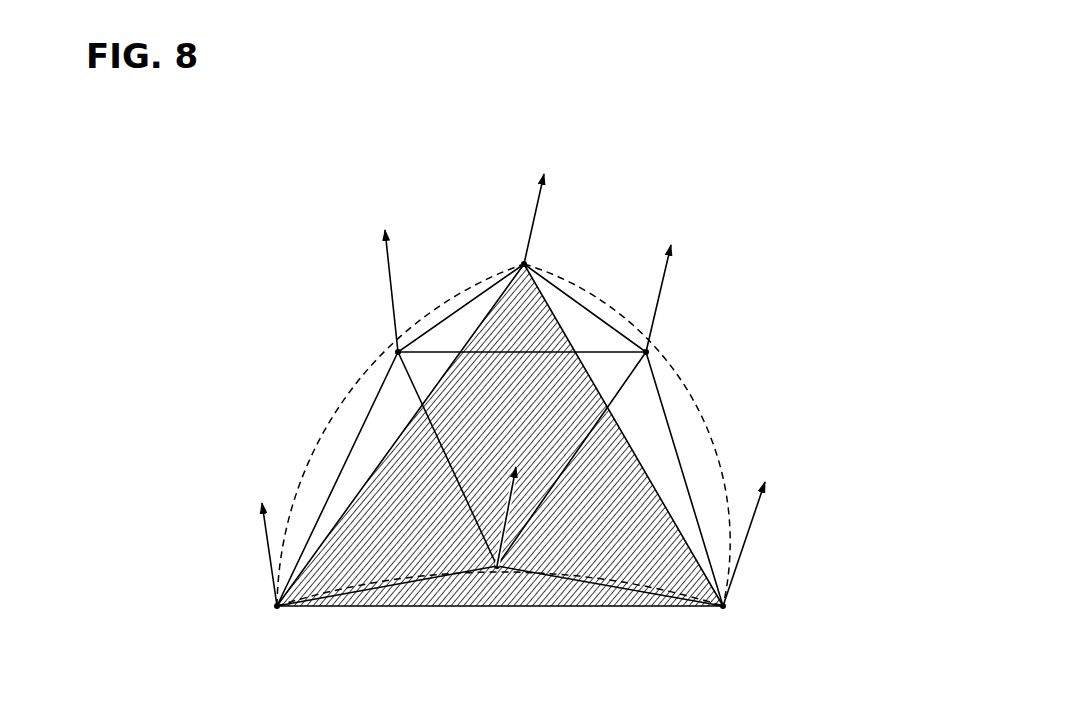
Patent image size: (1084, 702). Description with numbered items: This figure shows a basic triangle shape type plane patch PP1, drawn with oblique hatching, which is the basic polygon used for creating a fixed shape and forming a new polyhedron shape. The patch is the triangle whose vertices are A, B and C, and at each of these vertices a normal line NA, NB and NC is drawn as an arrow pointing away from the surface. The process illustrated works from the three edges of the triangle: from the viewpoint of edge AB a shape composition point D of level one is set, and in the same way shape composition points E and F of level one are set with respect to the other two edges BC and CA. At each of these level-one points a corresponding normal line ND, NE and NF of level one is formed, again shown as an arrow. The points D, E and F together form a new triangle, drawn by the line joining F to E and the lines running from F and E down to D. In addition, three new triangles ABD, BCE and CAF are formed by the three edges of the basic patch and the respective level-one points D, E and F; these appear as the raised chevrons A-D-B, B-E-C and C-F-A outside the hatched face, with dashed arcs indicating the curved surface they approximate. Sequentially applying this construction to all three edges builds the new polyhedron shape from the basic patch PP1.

The basic triangle plane patch PP1 is at (326, 115).
The triangle vertex A is at (278, 621).
The triangle vertex B is at (724, 619).
The triangle vertex C is at (513, 254).
The shape composition point D of level 1 D is at (480, 554).
The shape composition point E of level 1 E is at (656, 344).
The shape composition point F of level 1 F is at (383, 351).
The normal line at vertex A NA is at (262, 537).
The normal line at vertex B NB is at (751, 529).
The normal line at vertex C NC is at (544, 204).
The normal line ND of level 1 ND is at (517, 500).
The normal line NE of level 1 NE is at (667, 284).
The normal line NF of level 1 NF is at (382, 276).